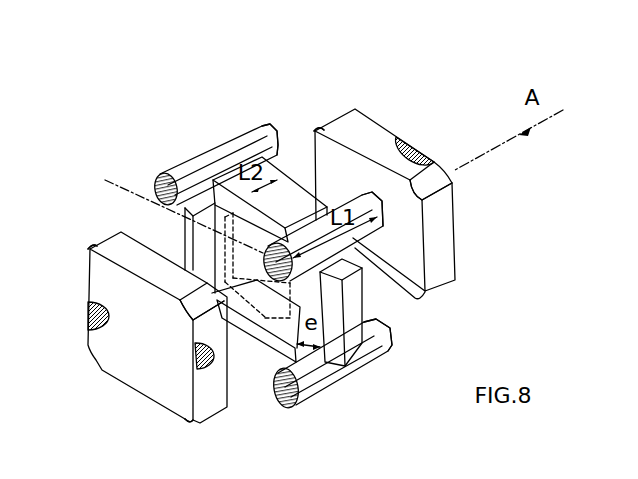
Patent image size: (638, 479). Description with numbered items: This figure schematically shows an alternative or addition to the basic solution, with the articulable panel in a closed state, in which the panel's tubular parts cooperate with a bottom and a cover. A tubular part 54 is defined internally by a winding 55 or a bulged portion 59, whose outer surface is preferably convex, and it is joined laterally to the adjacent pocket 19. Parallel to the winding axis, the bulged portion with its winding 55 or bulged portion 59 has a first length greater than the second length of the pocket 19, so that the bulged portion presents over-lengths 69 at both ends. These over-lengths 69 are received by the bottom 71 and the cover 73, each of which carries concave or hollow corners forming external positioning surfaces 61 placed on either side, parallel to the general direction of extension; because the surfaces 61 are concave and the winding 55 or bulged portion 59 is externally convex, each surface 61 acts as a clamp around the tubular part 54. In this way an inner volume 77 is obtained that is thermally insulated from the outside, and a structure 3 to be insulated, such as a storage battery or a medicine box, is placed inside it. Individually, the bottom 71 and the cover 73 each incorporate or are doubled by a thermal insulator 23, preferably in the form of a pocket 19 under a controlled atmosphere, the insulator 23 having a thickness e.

The structure 3 is at (171, 204).
The pocket 19 is at (248, 158).
The thermal insulator material 23 is at (418, 156).
The tubular part 54 is at (210, 157).
The winding 55 is at (400, 248).
The bulged portion 59 is at (322, 237).
The external positioning surface 61 is at (318, 126).
The over-length 69 is at (190, 180).
The bottom 71 is at (383, 141).
The cover 73 is at (128, 358).
The inner volume 77 is at (228, 262).